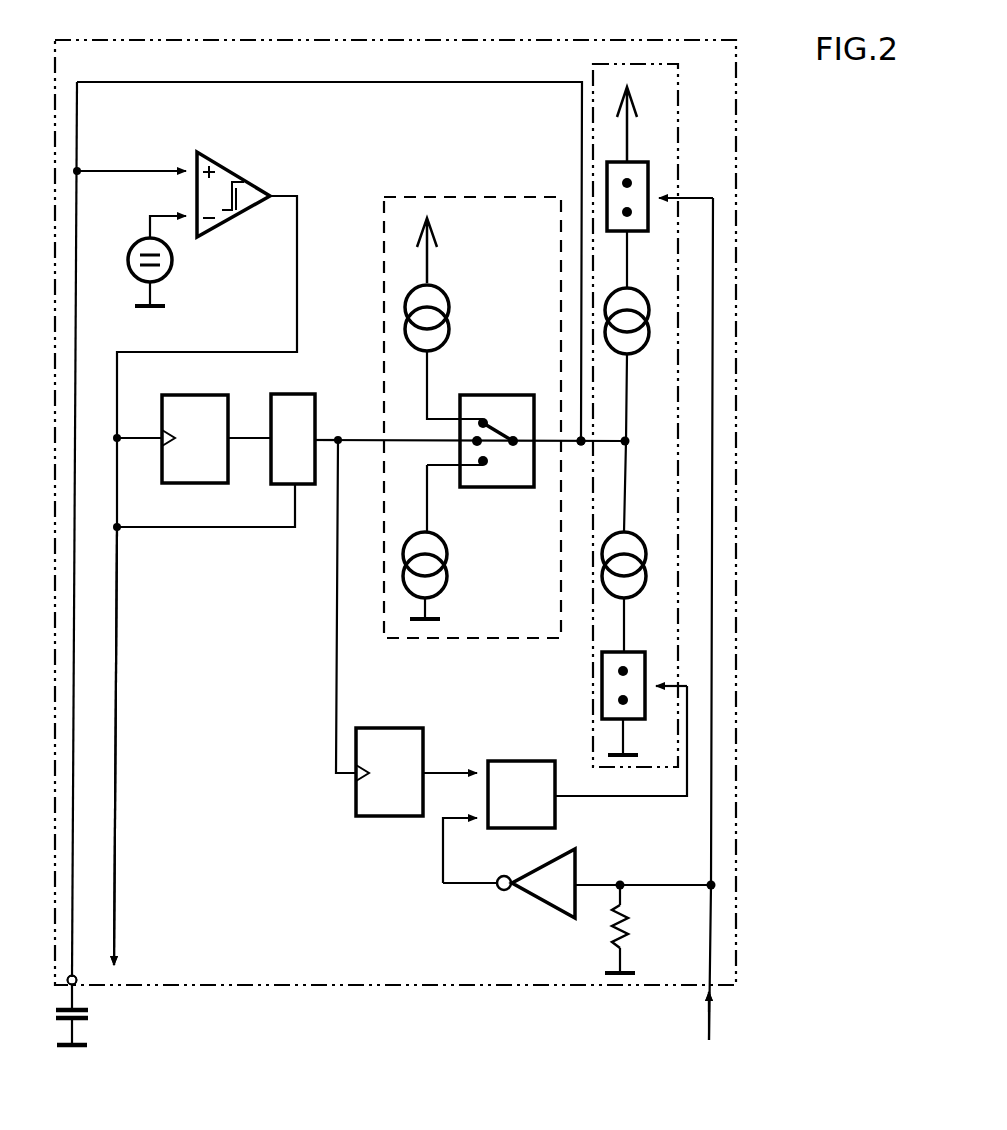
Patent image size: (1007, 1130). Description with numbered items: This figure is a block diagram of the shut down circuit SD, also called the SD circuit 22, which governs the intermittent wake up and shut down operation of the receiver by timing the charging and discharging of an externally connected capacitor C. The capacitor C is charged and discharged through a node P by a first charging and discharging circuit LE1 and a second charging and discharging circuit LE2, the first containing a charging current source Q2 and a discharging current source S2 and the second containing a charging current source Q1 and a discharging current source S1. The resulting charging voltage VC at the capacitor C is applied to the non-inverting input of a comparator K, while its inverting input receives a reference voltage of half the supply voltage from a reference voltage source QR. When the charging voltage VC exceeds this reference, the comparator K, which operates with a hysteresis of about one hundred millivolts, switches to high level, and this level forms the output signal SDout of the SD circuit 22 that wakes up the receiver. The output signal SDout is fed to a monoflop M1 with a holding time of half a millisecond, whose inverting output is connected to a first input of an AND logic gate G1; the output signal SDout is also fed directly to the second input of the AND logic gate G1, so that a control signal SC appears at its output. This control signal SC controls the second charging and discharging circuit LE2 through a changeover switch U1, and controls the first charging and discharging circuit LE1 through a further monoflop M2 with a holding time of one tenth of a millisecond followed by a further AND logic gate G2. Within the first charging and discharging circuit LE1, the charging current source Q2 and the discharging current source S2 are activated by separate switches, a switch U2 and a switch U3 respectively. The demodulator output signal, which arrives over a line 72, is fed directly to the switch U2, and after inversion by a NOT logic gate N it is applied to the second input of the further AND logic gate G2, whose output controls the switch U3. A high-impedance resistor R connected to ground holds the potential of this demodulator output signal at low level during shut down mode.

The comparator K is at (236, 172).
The reference voltage source QR is at (174, 270).
The monoflop M1 is at (184, 486).
The AND logic gate G1 is at (298, 394).
The control signal SC is at (320, 442).
The second charging and discharging circuit LE2 is at (474, 194).
The charging current source Q1 is at (450, 306).
The changeover switch U1 is at (479, 394).
The discharging current source S1 is at (448, 562).
The node P is at (583, 450).
The first charging and discharging circuit LE1 is at (688, 144).
The switch U2 is at (640, 234).
The charging current source Q2 is at (640, 352).
The discharging current source S2 is at (636, 594).
The switch U3 is at (636, 722).
The further monoflop M2 is at (388, 818).
The further AND logic gate G2 is at (560, 812).
The NOT logic gate N is at (536, 904).
The high-impedance resistor R is at (628, 926).
The output signal SDout is at (118, 950).
The charging voltage VC is at (80, 988).
The capacitor C is at (90, 1014).
The SD circuit 22 is at (298, 988).
The shut down circuit SD is at (395, 512).
The line 72 is at (709, 1034).